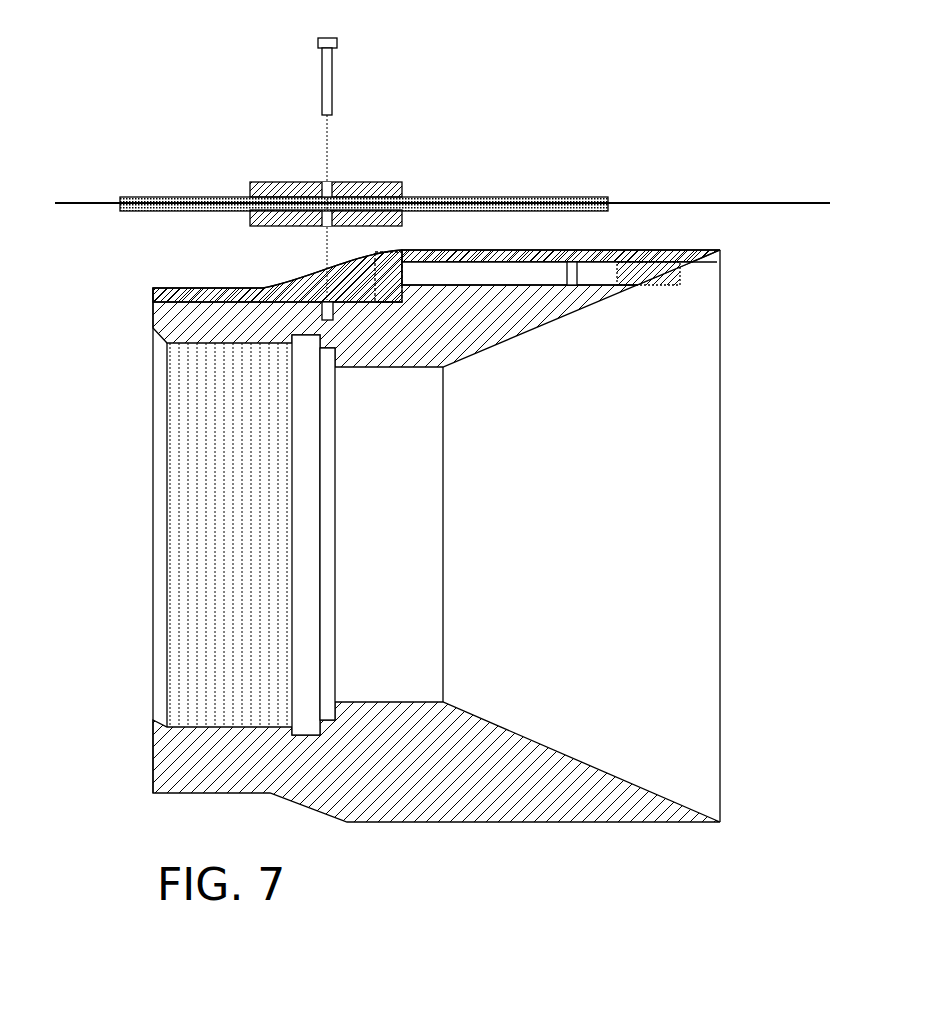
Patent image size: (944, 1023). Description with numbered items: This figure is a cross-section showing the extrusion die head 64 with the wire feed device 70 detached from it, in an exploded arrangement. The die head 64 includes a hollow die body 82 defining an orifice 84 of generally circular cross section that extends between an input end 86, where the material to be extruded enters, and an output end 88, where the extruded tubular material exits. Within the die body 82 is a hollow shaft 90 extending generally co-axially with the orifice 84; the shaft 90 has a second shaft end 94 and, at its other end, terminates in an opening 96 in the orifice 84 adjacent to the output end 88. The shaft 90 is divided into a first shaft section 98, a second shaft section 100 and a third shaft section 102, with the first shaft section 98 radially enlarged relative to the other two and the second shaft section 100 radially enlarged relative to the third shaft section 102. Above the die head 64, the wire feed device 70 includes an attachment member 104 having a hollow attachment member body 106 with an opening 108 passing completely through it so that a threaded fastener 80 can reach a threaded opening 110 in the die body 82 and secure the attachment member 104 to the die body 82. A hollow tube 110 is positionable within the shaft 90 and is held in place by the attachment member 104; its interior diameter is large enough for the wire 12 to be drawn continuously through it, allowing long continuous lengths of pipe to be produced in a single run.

The wire 12 is at (60, 203).
The extrusion die head 64 is at (130, 295).
The wire feed device 70 is at (133, 152).
The threaded fastener 80 is at (322, 72).
The hollow die body 82 is at (503, 795).
The orifice 84 is at (687, 546).
The input end 86 is at (115, 420).
The output end 88 is at (770, 393).
The hollow shaft 90 is at (467, 275).
The second shaft end 94 is at (387, 274).
The opening 96 is at (685, 290).
The first shaft section 98 is at (497, 270).
The second shaft section 100 is at (572, 262).
The third shaft section 102 is at (640, 288).
The attachment member 104 is at (340, 167).
The hollow attachment member body 106 is at (310, 182).
The opening 108 is at (333, 182).
The hollow tube 110 is at (200, 197).